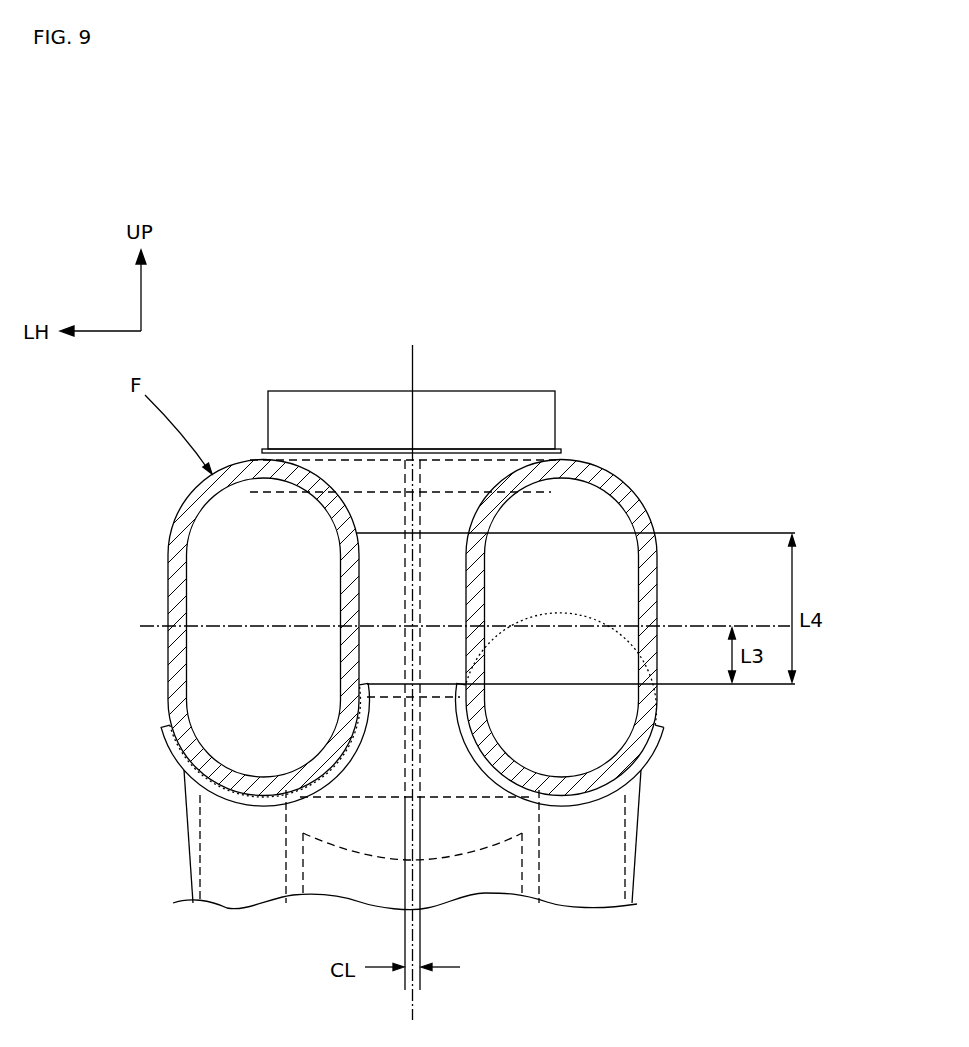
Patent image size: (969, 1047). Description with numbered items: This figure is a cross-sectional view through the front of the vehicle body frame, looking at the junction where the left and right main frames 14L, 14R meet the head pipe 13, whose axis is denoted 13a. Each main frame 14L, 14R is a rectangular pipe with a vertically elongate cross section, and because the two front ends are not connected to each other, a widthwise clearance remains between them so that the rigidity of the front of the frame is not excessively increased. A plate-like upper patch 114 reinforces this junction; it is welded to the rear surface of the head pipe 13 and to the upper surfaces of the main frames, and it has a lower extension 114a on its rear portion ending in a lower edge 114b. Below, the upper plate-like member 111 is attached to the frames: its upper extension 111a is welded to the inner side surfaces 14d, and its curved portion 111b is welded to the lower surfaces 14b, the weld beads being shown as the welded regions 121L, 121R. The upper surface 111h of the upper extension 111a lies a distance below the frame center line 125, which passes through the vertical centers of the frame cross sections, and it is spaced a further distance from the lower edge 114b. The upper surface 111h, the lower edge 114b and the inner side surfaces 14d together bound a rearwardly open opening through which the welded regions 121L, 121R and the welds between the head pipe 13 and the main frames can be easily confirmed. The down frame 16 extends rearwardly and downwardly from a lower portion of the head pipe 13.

The head pipe 13 is at (345, 395).
The axis of the head pipe 13a is at (413, 372).
The upper patch 114 is at (471, 441).
The lower extension 114a is at (485, 553).
The lower edge 114b is at (452, 517).
The left main frame 14L is at (175, 512).
The right main frame 14R is at (652, 494).
The inner side surfaces 14d is at (352, 597).
The frame center line 125 is at (142, 626).
The upper extension 111a is at (382, 679).
The upper surface 111h is at (443, 686).
The curved portion 111b is at (443, 764).
The lower surfaces 14b is at (248, 800).
The upper plate-like member 111 is at (244, 891).
The left welded region 121L is at (272, 808).
The right welded region 121R is at (554, 808).
The down frame 16 is at (535, 905).